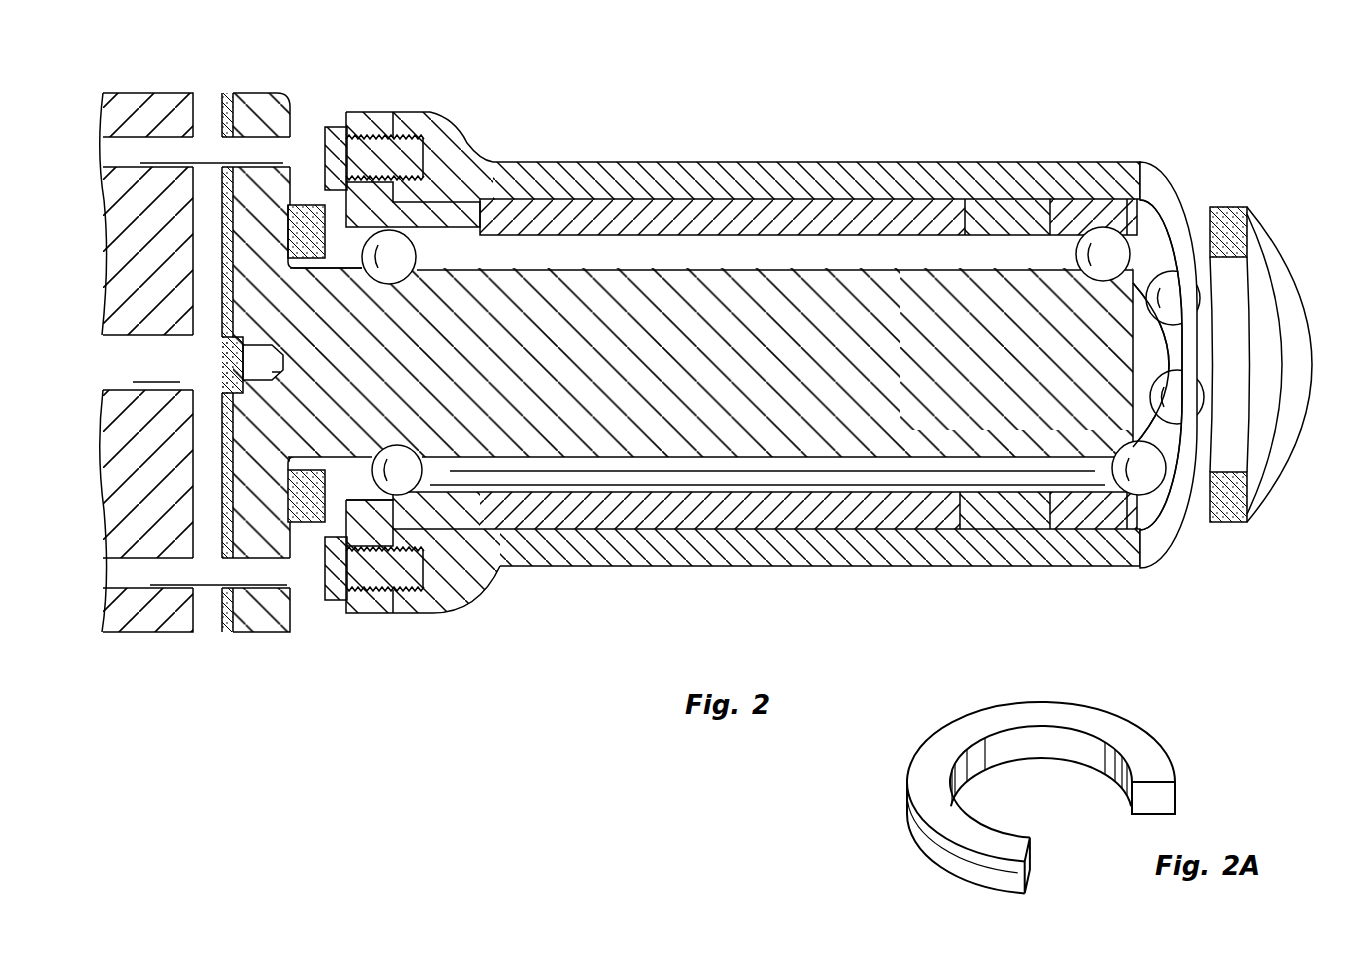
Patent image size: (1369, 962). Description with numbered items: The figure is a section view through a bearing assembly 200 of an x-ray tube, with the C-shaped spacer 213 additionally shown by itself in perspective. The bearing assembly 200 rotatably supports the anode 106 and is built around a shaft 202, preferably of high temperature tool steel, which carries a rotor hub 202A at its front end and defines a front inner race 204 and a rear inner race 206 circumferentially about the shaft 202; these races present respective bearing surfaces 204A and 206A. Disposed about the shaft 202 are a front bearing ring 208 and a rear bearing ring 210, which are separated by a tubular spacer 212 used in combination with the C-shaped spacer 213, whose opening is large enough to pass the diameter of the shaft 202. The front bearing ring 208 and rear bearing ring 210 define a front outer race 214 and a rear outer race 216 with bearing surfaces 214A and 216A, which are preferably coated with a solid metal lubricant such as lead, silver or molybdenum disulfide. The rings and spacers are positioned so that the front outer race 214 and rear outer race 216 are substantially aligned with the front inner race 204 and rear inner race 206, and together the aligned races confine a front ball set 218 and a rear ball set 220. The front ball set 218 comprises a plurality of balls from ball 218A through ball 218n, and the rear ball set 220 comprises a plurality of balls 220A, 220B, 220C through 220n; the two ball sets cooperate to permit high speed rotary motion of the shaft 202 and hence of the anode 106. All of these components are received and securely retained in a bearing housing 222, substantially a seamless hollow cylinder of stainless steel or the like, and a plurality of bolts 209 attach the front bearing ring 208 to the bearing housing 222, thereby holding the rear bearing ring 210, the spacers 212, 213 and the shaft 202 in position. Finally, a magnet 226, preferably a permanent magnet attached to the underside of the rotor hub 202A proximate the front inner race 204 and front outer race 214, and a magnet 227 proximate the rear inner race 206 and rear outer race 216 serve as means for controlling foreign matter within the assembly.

In FIG. 2, the anode 106 is at (105, 522).
In FIG. 2, the bearing assembly 200 is at (699, 376).
In FIG. 2, the shaft 202 is at (653, 287).
In FIG. 2, the rotor hub 202A is at (241, 93).
In FIG. 2, the front inner race 204 is at (358, 466).
In FIG. 2, the bearing surface 204A is at (395, 505).
In FIG. 2, the rear inner race 206 is at (1084, 462).
In FIG. 2, the bearing surface 206A is at (1115, 500).
In FIG. 2, the front bearing ring 208 is at (455, 112).
In FIG. 2, the bolts 209 is at (340, 127).
In FIG. 2, the rear bearing ring 210 is at (1104, 232).
In FIG. 2, the tubular spacer 212 is at (898, 196).
In FIG. 2, the "C"-shaped spacer 213 is at (1008, 525).
In FIG. 2A, the "C"-shaped spacer 213 is at (1140, 742).
In FIG. 2, the front outer race 214 is at (366, 272).
In FIG. 2, the bearing surface 214A is at (380, 288).
In FIG. 2, the rear outer race 216 is at (1148, 237).
In FIG. 2, the bearing surface 216A is at (1213, 262).
In FIG. 2, the front ball set 218 is at (376, 300).
In FIG. 2, the ball 218A is at (238, 346).
In FIG. 2, the ball 218n is at (410, 475).
In FIG. 2, the rear ball set 220 is at (1180, 430).
In FIG. 2, the ball 220A is at (1112, 248).
In FIG. 2, the ball 220B is at (1178, 307).
In FIG. 2, the ball 220C is at (1190, 395).
In FIG. 2, the ball 220n is at (1150, 480).
In FIG. 2, the bearing housing 222 is at (706, 212).
In FIG. 2, the magnet 226 is at (343, 238).
In FIG. 2, the magnet 227 is at (1250, 492).